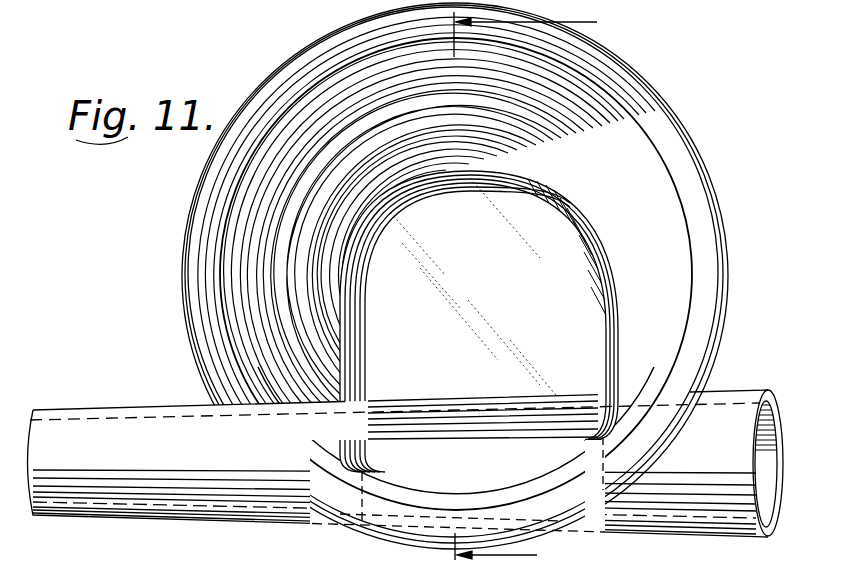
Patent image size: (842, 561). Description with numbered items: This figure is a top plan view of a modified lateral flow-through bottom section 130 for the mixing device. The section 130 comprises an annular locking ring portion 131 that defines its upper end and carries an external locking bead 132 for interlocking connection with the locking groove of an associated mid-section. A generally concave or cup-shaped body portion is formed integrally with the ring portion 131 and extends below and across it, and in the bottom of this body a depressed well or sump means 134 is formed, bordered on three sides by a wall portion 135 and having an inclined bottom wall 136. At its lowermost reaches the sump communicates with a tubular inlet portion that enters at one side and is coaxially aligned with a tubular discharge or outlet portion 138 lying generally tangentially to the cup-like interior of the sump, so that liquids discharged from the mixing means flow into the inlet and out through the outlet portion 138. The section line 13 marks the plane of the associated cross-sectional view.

The section line 13- 13 is at (543, 286).
The lateral flow-through bottom section 130 is at (690, 133).
The annular locking ring portion 131 is at (695, 201).
The external locking bead 132 is at (723, 235).
The sump means 134 is at (527, 241).
The wall portion 135 is at (606, 343).
The inclined bottom wall 136 is at (733, 393).
The tubular discharge or outlet portion 138 is at (123, 405).